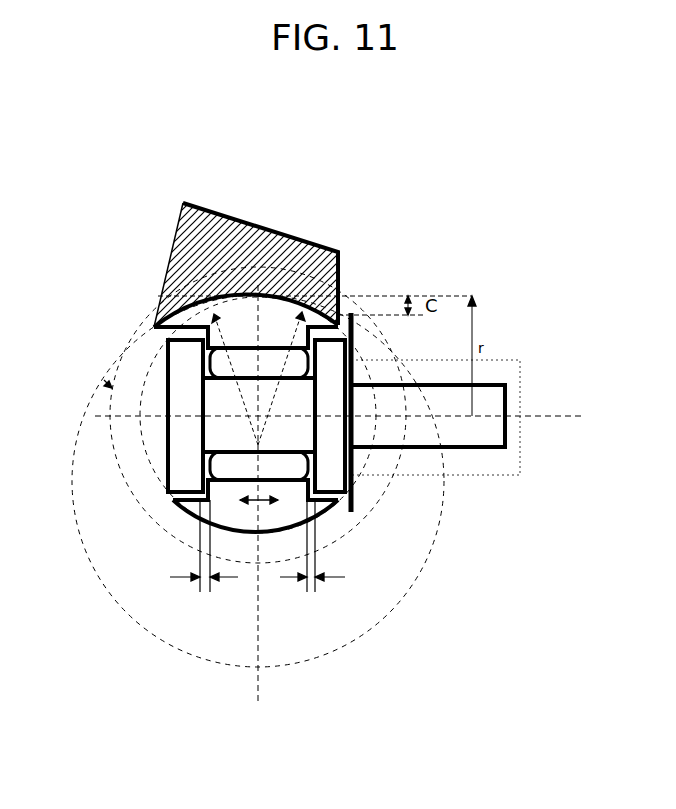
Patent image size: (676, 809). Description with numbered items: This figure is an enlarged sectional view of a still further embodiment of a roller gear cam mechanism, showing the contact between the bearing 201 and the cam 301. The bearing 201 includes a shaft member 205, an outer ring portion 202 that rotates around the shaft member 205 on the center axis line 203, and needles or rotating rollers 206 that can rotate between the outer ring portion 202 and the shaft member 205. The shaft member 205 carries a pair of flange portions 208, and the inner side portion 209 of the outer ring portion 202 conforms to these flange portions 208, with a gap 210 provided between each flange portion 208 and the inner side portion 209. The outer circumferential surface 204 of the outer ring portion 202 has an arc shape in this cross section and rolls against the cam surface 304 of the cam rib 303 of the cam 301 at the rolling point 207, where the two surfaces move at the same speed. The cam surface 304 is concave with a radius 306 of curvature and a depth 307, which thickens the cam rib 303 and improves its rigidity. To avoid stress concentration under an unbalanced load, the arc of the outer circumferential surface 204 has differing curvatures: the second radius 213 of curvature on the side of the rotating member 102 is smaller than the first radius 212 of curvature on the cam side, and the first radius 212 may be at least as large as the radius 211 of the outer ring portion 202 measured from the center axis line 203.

The rotating member 102 is at (483, 458).
The bearing 201 is at (158, 373).
The outer ring portion 202 is at (354, 300).
The center axis line 203 is at (553, 416).
The outer circumferential surface 204 is at (200, 322).
The shaft member 205 is at (335, 462).
The needles or rotating rollers 206 is at (218, 300).
The rolling point 207 is at (300, 258).
The flange portions 208 is at (168, 463).
The inner side portion 209 is at (220, 503).
The gap 210 is at (330, 522).
The radius of the outer ring portion 211 is at (474, 340).
The first radius of curvature 212 is at (338, 472).
The second radius of curvature 213 is at (322, 358).
The cam 301 is at (246, 209).
The cam rib 303 is at (205, 196).
The cam surface 304 is at (212, 298).
The radius of curvature of the cam surface 306 is at (118, 388).
The depth of concave surface 307 is at (412, 297).